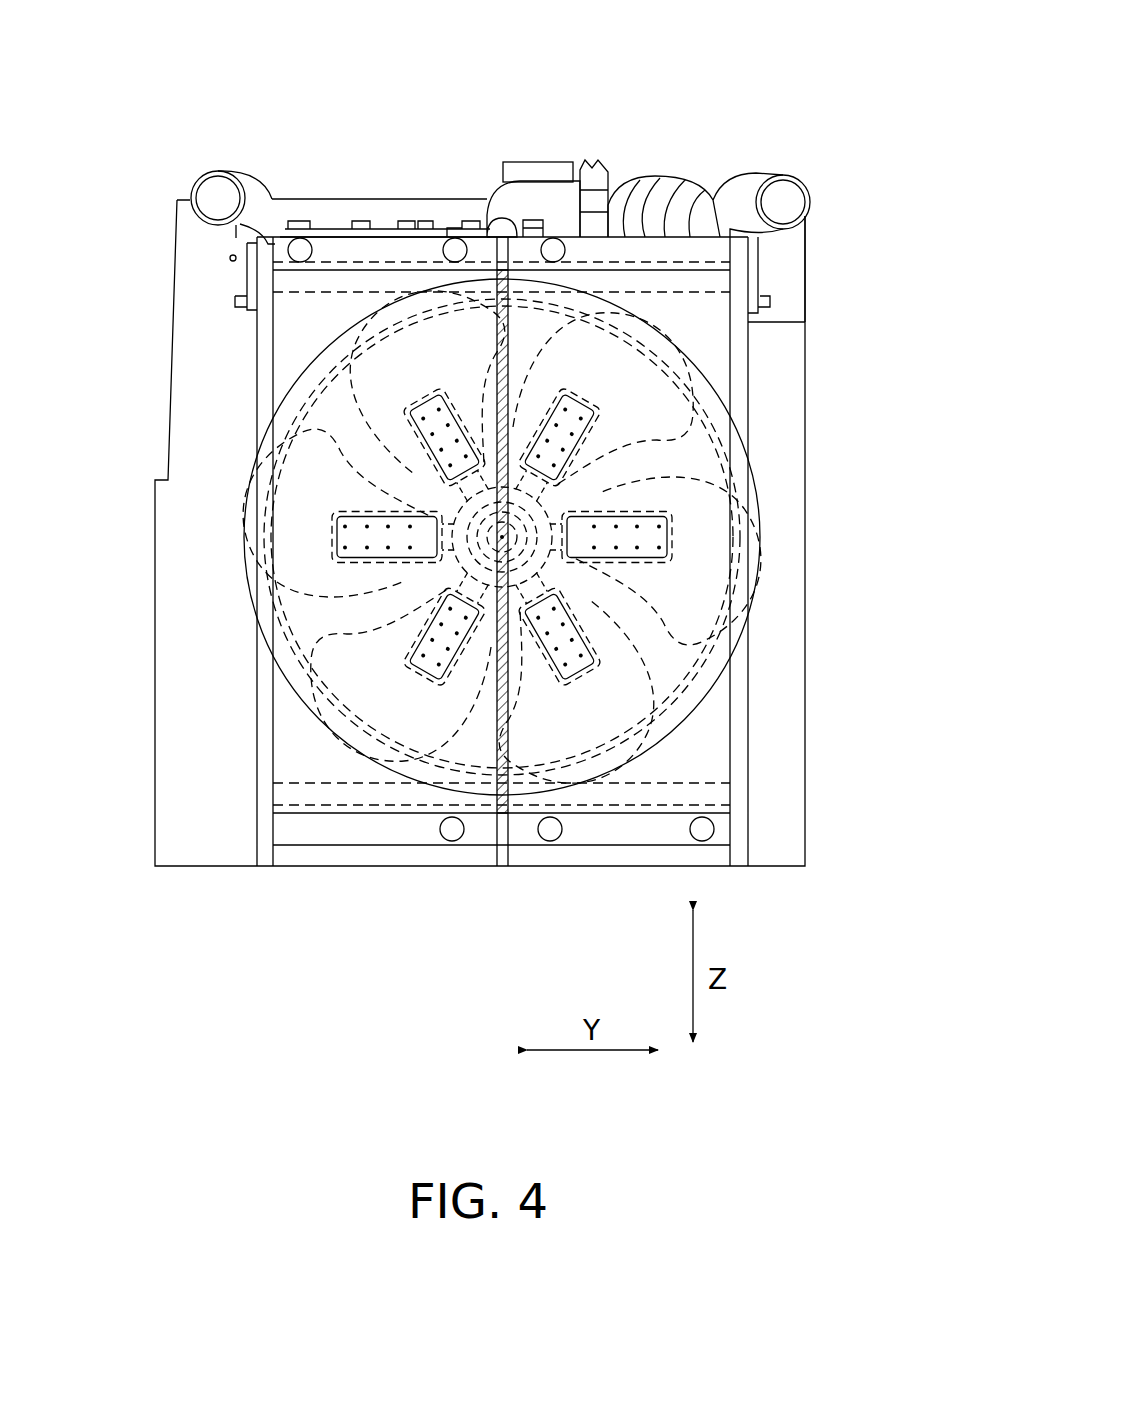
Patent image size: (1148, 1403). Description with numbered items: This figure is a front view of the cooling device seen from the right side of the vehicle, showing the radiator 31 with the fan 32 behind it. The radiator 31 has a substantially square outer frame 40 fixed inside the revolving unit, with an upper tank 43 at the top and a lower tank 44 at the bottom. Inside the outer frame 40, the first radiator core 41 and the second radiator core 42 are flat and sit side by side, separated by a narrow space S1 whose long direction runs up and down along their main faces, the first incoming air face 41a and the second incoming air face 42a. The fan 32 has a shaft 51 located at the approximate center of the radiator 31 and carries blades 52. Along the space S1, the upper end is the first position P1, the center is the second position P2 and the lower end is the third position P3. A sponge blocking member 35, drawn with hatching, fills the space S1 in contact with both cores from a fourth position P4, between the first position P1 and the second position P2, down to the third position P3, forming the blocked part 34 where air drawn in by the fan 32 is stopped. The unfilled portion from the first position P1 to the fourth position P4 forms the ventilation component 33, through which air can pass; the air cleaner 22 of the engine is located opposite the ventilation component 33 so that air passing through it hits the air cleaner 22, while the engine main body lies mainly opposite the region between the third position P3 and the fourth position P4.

The air cleaner 22 is at (527, 190).
The radiator 31 is at (276, 178).
The fan 32 is at (290, 356).
The ventilation component 33 is at (497, 378).
The blocked part 34 is at (498, 657).
The blocking member 35 is at (497, 701).
The outer frame 40 is at (230, 258).
The first radiator core 41 is at (700, 737).
The first incoming air face 41a is at (647, 770).
The second radiator core 42 is at (298, 532).
The second incoming air face 42a is at (320, 768).
The upper tank 43 is at (375, 262).
The lower tank 44 is at (372, 832).
The shaft 51 is at (548, 518).
The blades 52 is at (613, 433).
The space S1 is at (502, 537).
The first position P1 is at (500, 297).
The second position P2 is at (502, 537).
The third position P3 is at (494, 808).
The fourth position P4 is at (500, 433).